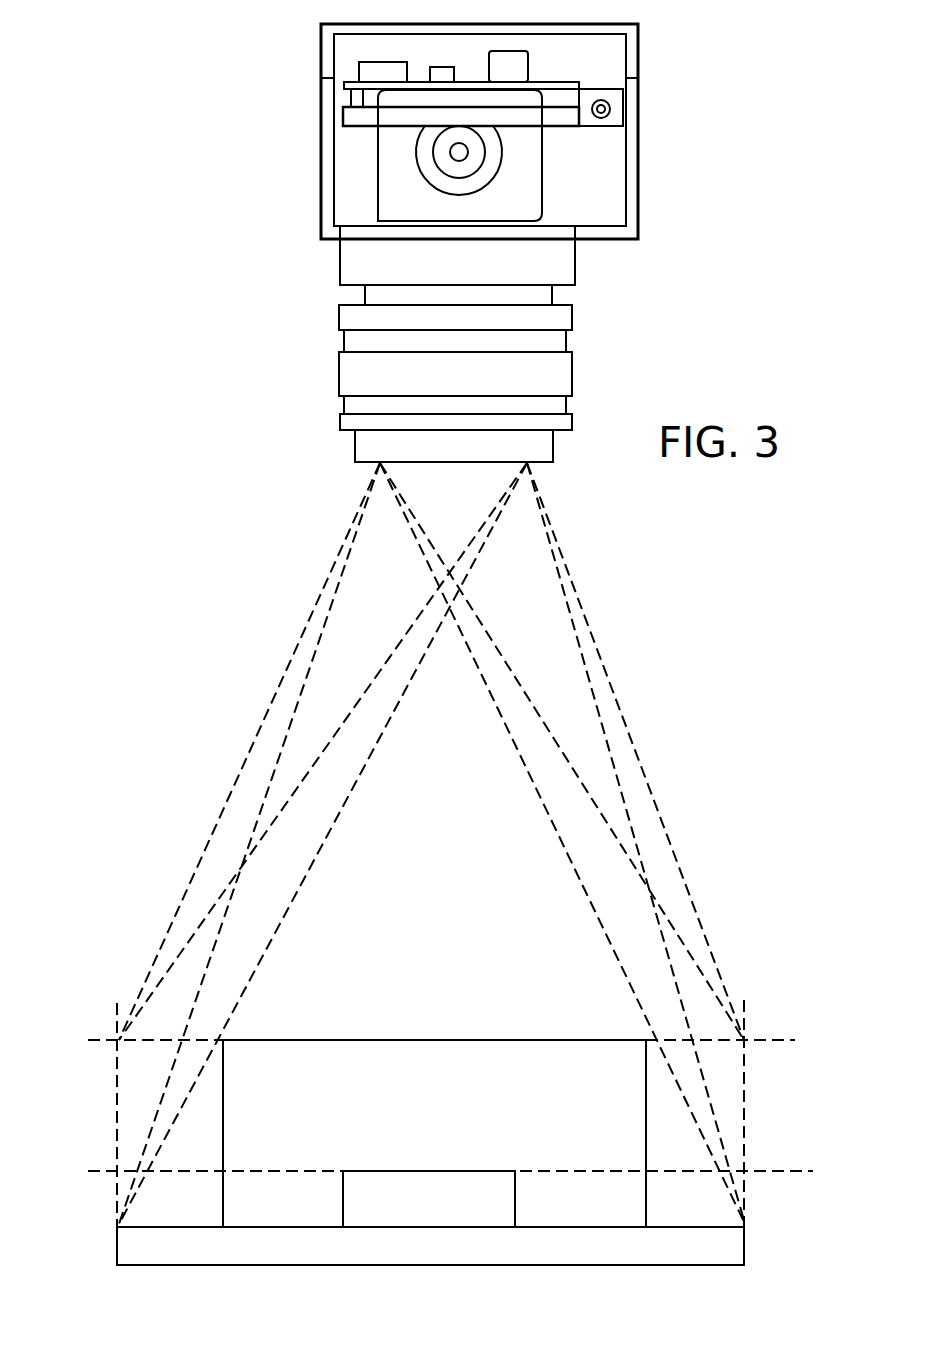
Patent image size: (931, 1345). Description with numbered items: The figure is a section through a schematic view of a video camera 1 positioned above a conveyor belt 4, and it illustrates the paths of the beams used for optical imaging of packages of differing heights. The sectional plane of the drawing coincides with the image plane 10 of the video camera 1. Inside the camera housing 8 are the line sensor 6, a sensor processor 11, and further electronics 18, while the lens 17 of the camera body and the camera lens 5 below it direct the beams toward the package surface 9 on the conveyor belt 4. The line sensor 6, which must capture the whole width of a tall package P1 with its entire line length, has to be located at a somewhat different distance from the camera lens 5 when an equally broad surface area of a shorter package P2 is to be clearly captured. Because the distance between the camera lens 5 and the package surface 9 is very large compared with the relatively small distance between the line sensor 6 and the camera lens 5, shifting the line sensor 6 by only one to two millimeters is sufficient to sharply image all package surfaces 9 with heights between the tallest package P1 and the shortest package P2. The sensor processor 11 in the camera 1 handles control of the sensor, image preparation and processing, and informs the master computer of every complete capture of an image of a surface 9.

The video camera 1 is at (612, 210).
The conveyor belt 4 is at (720, 1250).
The camera lens 5 is at (356, 376).
The line sensor 6 is at (360, 116).
The housing 8 is at (327, 172).
The package surface 9 is at (447, 1040).
The image plane 10 is at (428, 765).
The sensor processor 11 is at (368, 72).
The lens 17 is at (467, 138).
The upper circuit board 18 is at (524, 97).
The tall package P1 is at (764, 1040).
The shorter package P2 is at (792, 1171).